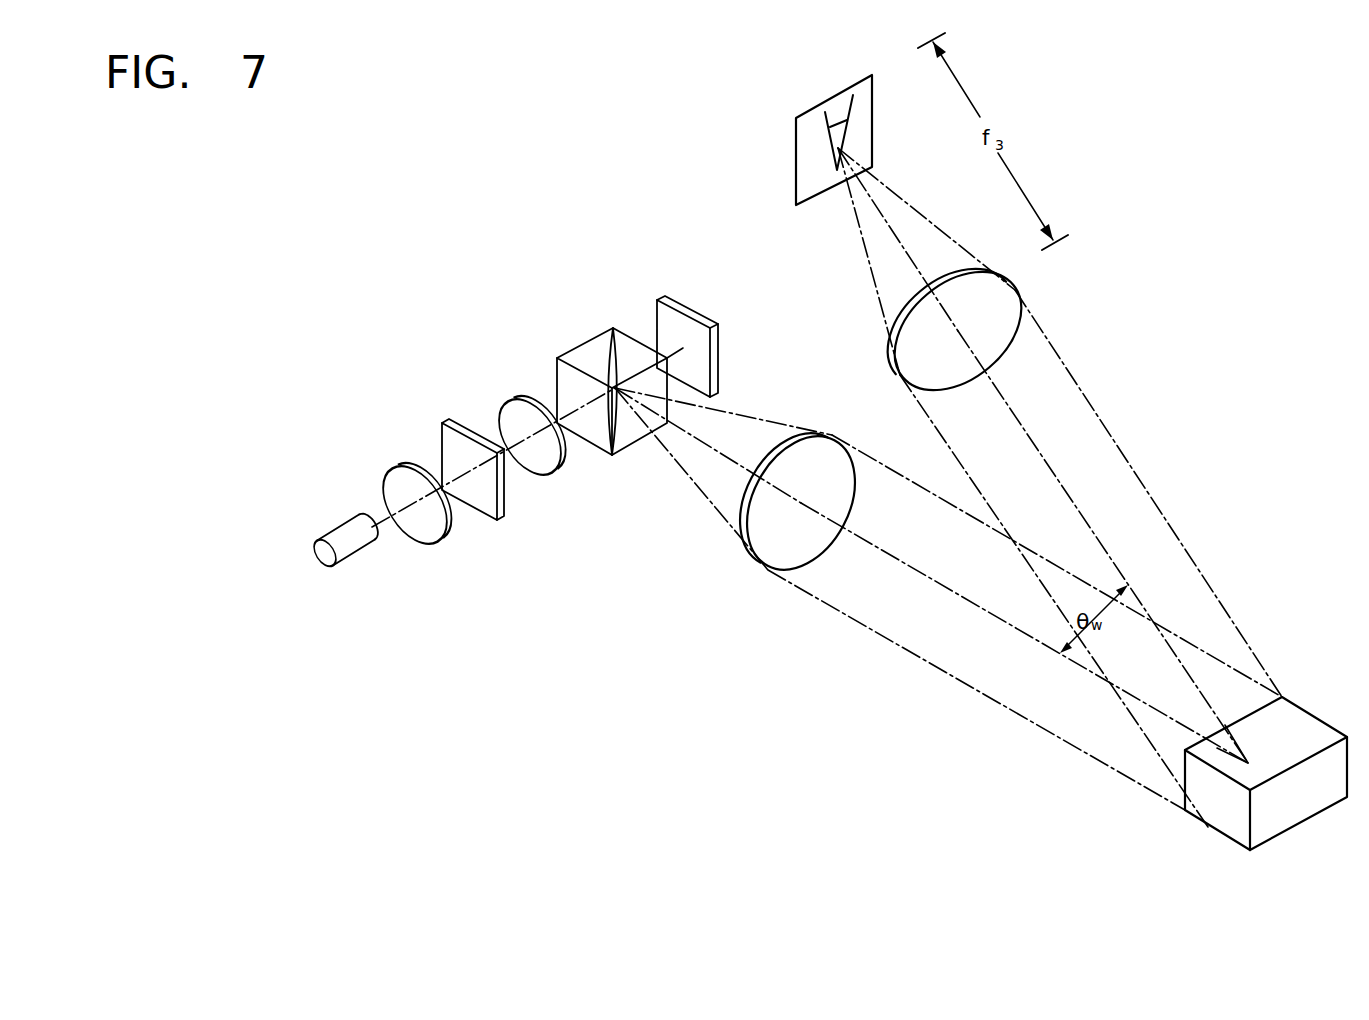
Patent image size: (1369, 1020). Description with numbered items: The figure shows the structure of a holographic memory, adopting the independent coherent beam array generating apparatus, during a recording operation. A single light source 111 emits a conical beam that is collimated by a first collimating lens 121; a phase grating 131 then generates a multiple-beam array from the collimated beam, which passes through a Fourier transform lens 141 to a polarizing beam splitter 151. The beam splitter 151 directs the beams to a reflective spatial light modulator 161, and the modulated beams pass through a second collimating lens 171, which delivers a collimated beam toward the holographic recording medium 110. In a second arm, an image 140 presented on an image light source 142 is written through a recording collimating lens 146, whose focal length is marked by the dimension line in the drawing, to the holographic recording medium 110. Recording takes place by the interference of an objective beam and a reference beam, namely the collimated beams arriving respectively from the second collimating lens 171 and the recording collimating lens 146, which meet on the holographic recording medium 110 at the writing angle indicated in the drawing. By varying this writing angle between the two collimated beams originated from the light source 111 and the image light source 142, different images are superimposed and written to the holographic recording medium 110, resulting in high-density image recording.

The holographic recording medium 110 is at (1310, 807).
The light source 111 is at (338, 528).
The first collimating lens 121 is at (400, 465).
The phase grating 131 is at (442, 423).
The Fourier transform lens 141 is at (517, 402).
The polarizing beam splitter 151 is at (587, 342).
The reflective spatial light modulator 161 is at (660, 298).
The second collimating lens 171 is at (772, 553).
The image 140 is at (810, 190).
The image light source 142 is at (796, 160).
The recording collimating lens 146 is at (1005, 315).